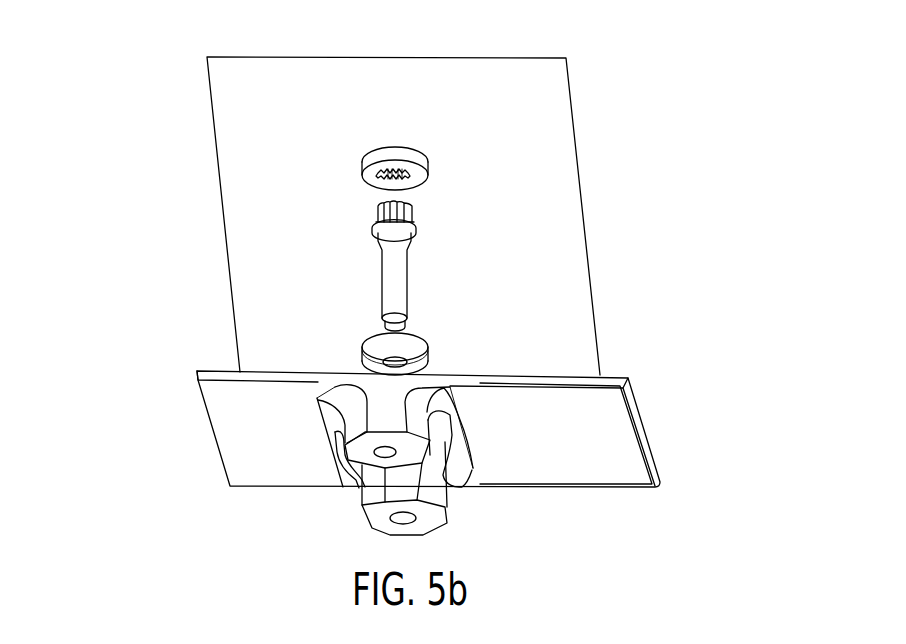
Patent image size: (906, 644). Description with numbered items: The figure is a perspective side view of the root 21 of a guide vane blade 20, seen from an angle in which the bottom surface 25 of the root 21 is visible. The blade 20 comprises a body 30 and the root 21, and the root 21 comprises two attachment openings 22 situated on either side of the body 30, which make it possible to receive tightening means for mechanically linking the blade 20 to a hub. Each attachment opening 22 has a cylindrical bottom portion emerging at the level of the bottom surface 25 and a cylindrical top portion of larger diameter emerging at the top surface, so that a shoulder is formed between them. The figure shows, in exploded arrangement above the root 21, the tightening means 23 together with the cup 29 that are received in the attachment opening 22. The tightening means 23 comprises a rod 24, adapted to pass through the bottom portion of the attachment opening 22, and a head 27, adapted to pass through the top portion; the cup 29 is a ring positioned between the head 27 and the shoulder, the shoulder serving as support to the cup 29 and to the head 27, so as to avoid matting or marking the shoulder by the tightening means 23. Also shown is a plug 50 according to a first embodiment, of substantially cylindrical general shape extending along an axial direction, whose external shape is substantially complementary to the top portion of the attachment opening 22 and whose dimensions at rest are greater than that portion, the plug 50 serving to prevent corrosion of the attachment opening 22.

The blade 20 is at (156, 85).
The body 30 is at (247, 183).
The root 21 is at (257, 426).
The bottom surface 25 is at (579, 460).
The attachment opening 22 is at (372, 462).
The plug 50 is at (412, 140).
The head 27 is at (426, 210).
The tightening means 23 is at (363, 278).
The rod 24 is at (419, 277).
The cup 29 is at (354, 343).